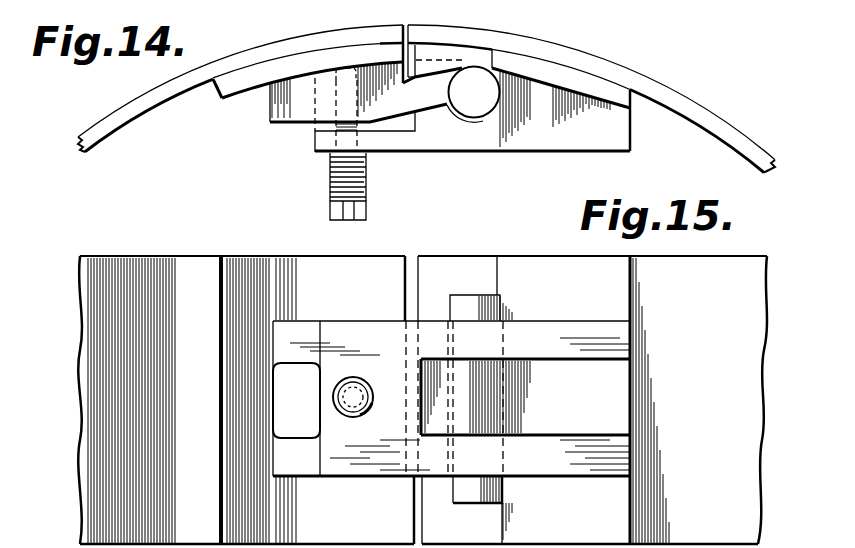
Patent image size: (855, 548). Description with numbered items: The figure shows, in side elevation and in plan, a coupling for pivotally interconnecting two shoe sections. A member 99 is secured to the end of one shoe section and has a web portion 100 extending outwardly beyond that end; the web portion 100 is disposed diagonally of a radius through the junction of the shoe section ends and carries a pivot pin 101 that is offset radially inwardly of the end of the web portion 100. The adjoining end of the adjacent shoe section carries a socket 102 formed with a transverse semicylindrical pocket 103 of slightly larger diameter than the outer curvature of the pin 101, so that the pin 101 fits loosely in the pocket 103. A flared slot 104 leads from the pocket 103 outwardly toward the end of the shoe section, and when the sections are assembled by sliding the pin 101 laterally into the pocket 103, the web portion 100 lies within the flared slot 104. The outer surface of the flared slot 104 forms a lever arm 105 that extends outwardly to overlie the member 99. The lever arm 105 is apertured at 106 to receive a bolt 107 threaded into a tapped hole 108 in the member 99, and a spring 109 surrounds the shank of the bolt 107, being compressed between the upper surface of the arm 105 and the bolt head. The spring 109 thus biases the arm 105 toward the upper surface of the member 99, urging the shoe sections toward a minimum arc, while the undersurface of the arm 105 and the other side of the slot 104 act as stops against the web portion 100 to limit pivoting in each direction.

In FIG. 14, the member 99 is at (265, 108).
In FIG. 15, the member 99 is at (299, 470).
In FIG. 14, the web portion 100 is at (430, 98).
In FIG. 15, the web portion 100 is at (432, 386).
In FIG. 14, the pivot pin 101 is at (485, 107).
In FIG. 15, the pivot pin 101 is at (467, 298).
In FIG. 14, the socket 102 is at (571, 131).
In FIG. 15, the socket 102 is at (593, 466).
In FIG. 14, the semicylindrical pocket 103 is at (465, 111).
In FIG. 15, the semicylindrical pocket 103 is at (452, 350).
In FIG. 14, the flared slot 104 is at (447, 66).
In FIG. 15, the flared slot 104 is at (413, 400).
In FIG. 15, the lever arm 105 is at (370, 470).
In FIG. 14, the aperture 106 is at (358, 137).
In FIG. 14, the bolt 107 is at (367, 212).
In FIG. 15, the bolt 107 is at (331, 398).
In FIG. 14, the tapped hole 108 is at (335, 100).
In FIG. 14, the spring 109 is at (327, 177).
In FIG. 15, the spring 109 is at (333, 382).